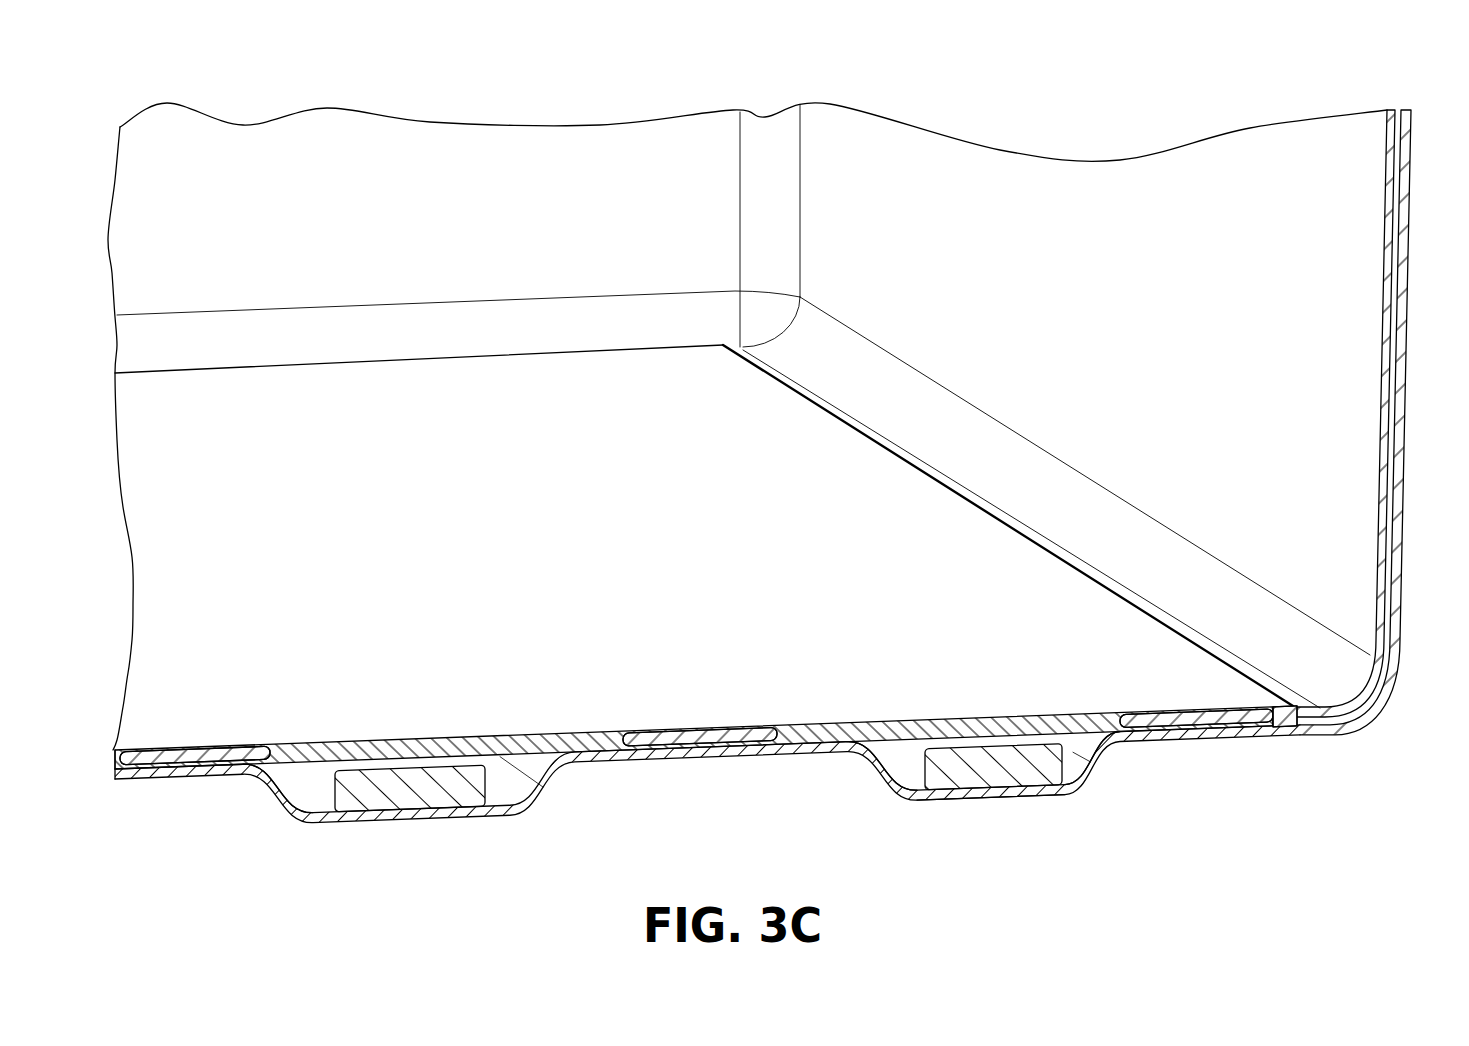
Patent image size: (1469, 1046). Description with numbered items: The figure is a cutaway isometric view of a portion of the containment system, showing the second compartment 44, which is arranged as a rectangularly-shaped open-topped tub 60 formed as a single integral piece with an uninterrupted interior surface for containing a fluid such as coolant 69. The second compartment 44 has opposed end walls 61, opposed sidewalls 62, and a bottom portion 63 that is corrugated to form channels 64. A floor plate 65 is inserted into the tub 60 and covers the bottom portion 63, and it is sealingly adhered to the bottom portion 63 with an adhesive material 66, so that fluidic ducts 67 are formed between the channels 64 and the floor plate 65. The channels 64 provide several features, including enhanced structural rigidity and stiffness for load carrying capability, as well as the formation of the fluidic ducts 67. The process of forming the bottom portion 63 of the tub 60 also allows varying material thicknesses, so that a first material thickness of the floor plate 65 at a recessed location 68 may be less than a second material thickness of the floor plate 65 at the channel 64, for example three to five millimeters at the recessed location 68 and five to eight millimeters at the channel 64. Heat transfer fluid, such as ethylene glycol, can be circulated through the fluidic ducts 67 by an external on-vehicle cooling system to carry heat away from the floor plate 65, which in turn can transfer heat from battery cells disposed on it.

The second compartment 44 is at (1062, 152).
The open-topped tub 60 is at (433, 127).
The end walls 61 is at (1363, 402).
The sidewalls 62 is at (575, 183).
The bottom portion 63 is at (790, 757).
The channels 64 is at (1005, 800).
The floor plate 65 is at (420, 412).
The adhesive material 66 is at (183, 758).
The fluidic ducts 67 is at (313, 793).
The recessed location 68 is at (1287, 727).
The coolant 69 is at (397, 803).